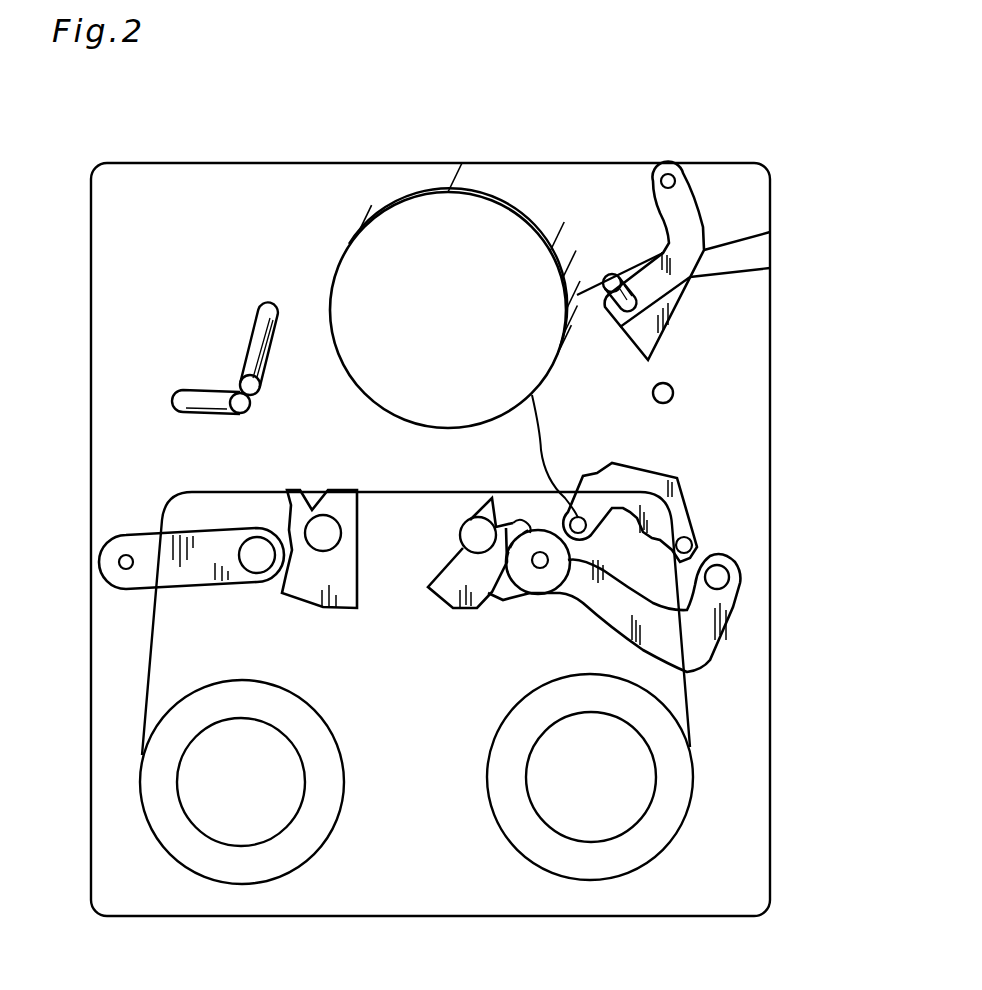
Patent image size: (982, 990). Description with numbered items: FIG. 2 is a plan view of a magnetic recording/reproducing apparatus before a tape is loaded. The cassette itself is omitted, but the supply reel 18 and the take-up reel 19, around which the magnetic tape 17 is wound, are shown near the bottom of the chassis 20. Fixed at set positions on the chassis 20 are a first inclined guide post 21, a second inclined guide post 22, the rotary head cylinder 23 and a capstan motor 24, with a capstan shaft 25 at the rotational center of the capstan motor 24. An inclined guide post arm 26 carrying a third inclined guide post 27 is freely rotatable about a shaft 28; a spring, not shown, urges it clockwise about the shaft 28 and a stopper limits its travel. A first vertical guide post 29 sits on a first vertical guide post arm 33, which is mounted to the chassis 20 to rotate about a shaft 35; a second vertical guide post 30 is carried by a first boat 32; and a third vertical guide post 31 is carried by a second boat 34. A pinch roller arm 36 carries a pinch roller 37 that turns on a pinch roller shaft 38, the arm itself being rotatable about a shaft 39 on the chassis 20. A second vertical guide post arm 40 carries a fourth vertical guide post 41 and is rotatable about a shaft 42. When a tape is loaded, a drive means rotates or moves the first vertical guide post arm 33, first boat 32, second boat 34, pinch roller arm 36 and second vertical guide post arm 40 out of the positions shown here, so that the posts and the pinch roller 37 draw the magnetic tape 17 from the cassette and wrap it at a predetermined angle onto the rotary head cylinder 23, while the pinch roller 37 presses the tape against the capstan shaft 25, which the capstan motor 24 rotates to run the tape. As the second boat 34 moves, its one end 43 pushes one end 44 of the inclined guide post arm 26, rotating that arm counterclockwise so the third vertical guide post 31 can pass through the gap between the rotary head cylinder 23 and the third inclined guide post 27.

The magnetic tape 17 is at (152, 667).
The supply reel 18 is at (230, 885).
The take-up reel 19 is at (590, 880).
The chassis 20 is at (148, 163).
The first inclined guide post 21 is at (184, 390).
The second inclined guide post 22 is at (270, 306).
The rotary head cylinder 23 is at (549, 191).
The capstan motor 24 is at (733, 242).
The capstan shaft 25 is at (673, 385).
The inclined guide post arm 26 is at (697, 195).
The third inclined guide post 27 is at (612, 274).
The shaft 28 is at (668, 165).
The first vertical guide post 29 is at (257, 536).
The second vertical guide post 30 is at (340, 490).
The third vertical guide post 31 is at (468, 520).
The first boat 32 is at (287, 610).
The first vertical guide post arm 33 is at (122, 588).
The second boat 34 is at (430, 603).
The shaft 35 is at (100, 559).
The pinch roller arm 36 is at (720, 640).
The pinch roller 37 is at (500, 600).
The pinch roller shaft 38 is at (541, 569).
The shaft 39 is at (740, 578).
The second vertical guide post arm 40 is at (684, 492).
The fourth vertical guide post 41 is at (587, 517).
The shaft 42 is at (698, 540).
The one end of second boat 43 is at (523, 521).
The one end of inclined guide post arm 44 is at (770, 268).